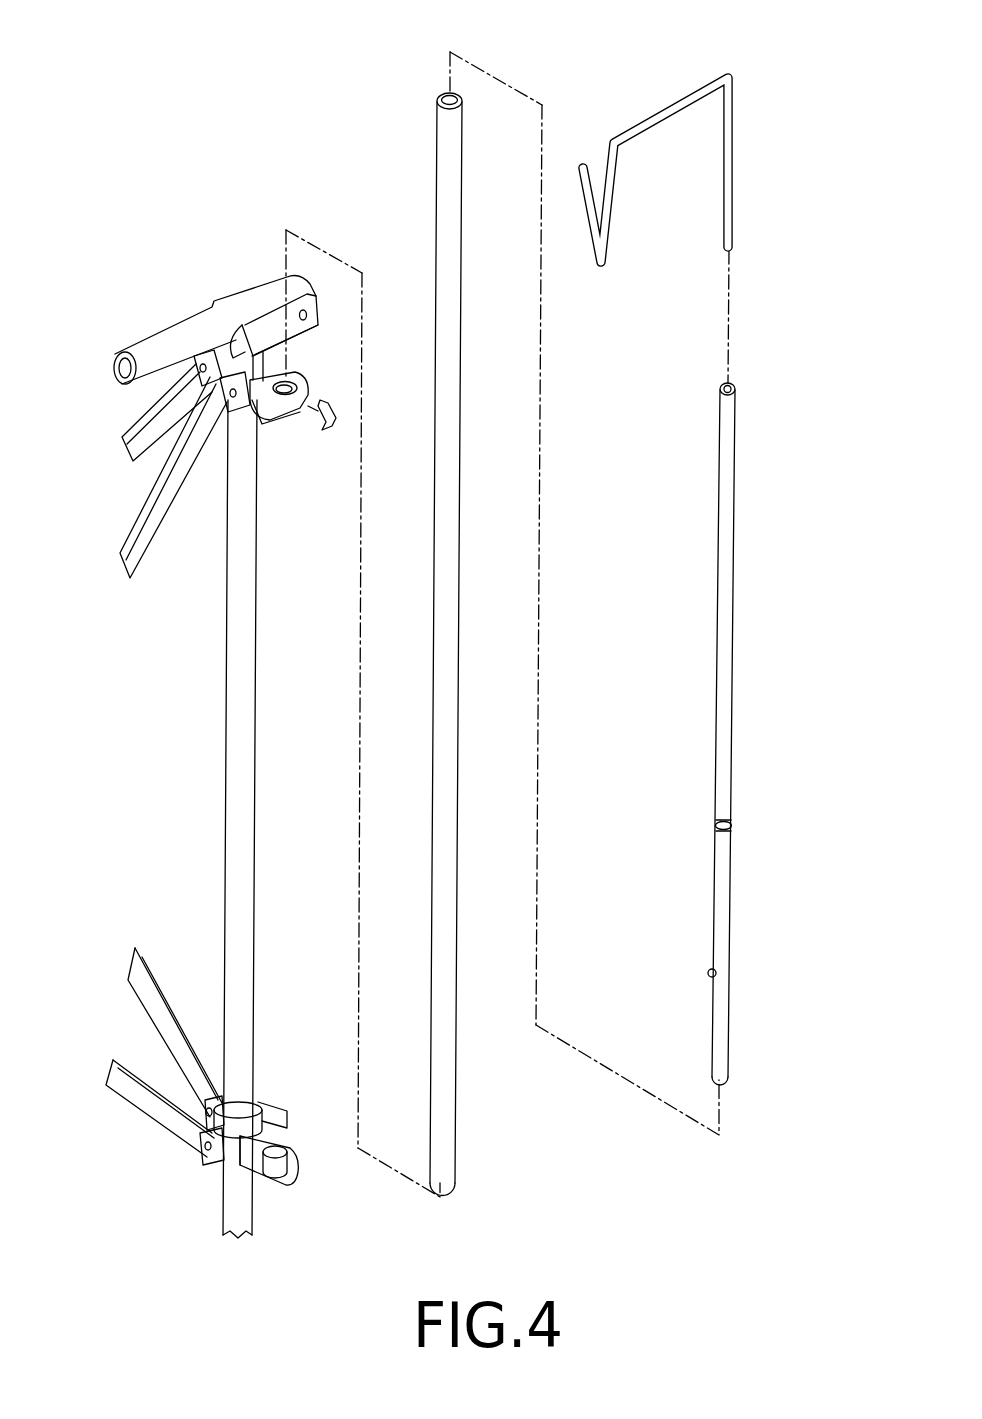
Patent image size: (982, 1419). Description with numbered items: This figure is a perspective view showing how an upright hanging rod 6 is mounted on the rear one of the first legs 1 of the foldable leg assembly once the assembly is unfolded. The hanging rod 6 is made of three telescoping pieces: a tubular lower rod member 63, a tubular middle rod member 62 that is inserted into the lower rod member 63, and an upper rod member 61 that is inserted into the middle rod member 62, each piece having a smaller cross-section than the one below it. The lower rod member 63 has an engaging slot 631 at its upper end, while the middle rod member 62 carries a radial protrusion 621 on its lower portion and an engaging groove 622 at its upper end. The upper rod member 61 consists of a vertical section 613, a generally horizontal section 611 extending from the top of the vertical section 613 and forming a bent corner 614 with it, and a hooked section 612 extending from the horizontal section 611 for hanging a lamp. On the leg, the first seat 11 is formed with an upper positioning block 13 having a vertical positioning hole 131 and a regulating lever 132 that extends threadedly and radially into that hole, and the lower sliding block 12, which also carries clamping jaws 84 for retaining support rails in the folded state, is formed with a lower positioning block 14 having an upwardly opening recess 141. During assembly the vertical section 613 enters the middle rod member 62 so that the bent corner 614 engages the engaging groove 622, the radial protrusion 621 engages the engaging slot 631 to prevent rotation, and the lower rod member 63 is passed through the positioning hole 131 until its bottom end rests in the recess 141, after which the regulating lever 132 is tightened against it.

The first leg 1 is at (240, 707).
The first seat 11 is at (263, 360).
The lower sliding block 12 is at (262, 1118).
The upper positioning block 13 is at (302, 396).
The positioning hole 131 is at (283, 400).
The regulating lever 132 is at (327, 432).
The lower positioning block 14 is at (290, 1178).
The recess 141 is at (293, 1147).
The clamping jaws 84 is at (289, 1130).
The hanging rod 6 is at (757, 655).
The upper rod member 61 is at (737, 128).
The generally horizontal section 611 is at (652, 118).
The hooked section 612 is at (578, 203).
The vertical section 613 is at (733, 194).
The bent corner 614 is at (731, 73).
The middle rod member 62 is at (729, 552).
The radial protrusion 621 is at (709, 972).
The engaging groove 622 is at (720, 389).
The lower rod member 63 is at (442, 401).
The engaging slot 631 is at (437, 104).